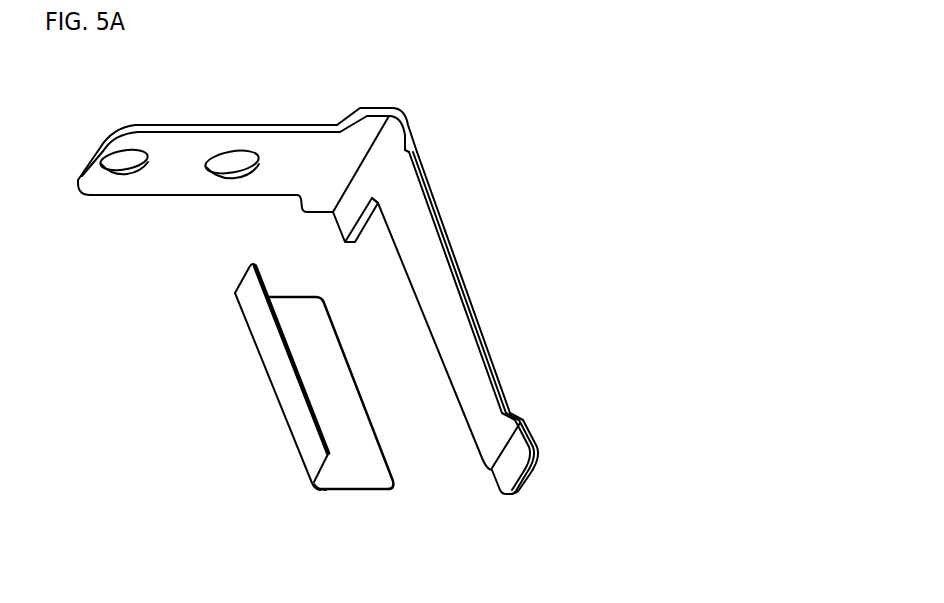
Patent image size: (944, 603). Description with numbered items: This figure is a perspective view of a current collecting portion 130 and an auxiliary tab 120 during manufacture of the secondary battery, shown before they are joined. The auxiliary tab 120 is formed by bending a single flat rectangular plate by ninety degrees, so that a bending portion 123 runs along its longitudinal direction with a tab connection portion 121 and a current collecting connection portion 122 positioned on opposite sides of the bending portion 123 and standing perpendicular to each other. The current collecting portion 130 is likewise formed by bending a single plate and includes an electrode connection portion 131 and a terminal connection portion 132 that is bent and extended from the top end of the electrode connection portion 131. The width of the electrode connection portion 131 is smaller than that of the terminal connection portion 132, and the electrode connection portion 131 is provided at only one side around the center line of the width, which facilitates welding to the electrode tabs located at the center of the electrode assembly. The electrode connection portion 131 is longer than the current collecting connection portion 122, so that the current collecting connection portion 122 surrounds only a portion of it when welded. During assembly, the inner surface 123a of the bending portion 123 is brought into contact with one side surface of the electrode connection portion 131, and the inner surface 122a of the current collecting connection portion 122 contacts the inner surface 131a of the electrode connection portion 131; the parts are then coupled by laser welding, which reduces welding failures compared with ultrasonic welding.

The auxiliary tab 120 is at (170, 338).
The tab connection portion 121 is at (327, 402).
The current collecting connection portion 122 is at (267, 347).
The bending portion 123 is at (268, 385).
The inner surface of the current collecting connection portion 122a is at (327, 462).
The inner surface of the bending portion 123a is at (333, 497).
The current collecting portion 130 is at (538, 130).
The electrode connection portion 131 is at (449, 284).
The inner surface of the electrode connection portion 131a is at (468, 357).
The terminal connection portion 132 is at (314, 152).